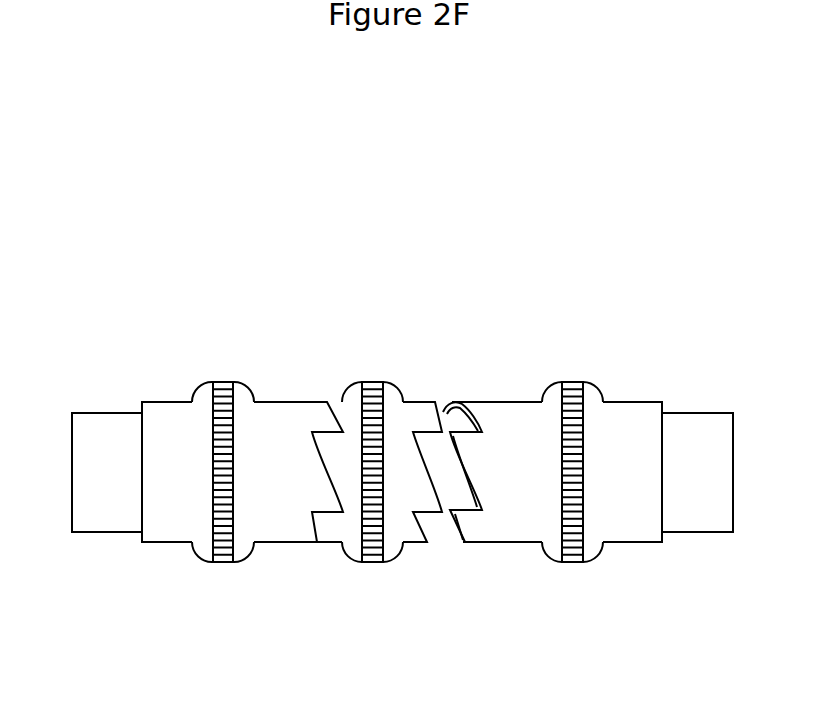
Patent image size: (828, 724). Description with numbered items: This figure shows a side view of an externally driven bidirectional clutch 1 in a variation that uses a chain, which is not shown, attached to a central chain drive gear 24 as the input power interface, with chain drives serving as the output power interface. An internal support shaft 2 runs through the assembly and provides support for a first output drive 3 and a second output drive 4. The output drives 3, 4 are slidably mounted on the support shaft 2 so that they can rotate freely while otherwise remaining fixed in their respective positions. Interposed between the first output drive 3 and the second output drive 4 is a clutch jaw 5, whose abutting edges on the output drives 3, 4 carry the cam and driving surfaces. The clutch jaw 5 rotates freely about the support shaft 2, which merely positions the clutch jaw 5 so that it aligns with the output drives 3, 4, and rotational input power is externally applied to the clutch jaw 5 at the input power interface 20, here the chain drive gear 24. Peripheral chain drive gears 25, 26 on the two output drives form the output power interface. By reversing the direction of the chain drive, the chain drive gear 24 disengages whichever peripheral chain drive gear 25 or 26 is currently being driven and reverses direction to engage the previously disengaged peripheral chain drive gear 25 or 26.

The bidirectional clutch 1 is at (208, 244).
The support shaft 2 is at (81, 462).
The first output drive 3 is at (163, 530).
The second output drive 4 is at (642, 532).
The clutch jaw 5 is at (343, 413).
The input power interface 20 is at (383, 393).
The chain drive gear 24 is at (370, 382).
The peripheral chain drive gear 25 is at (572, 563).
The peripheral chain drive gear 26 is at (222, 563).